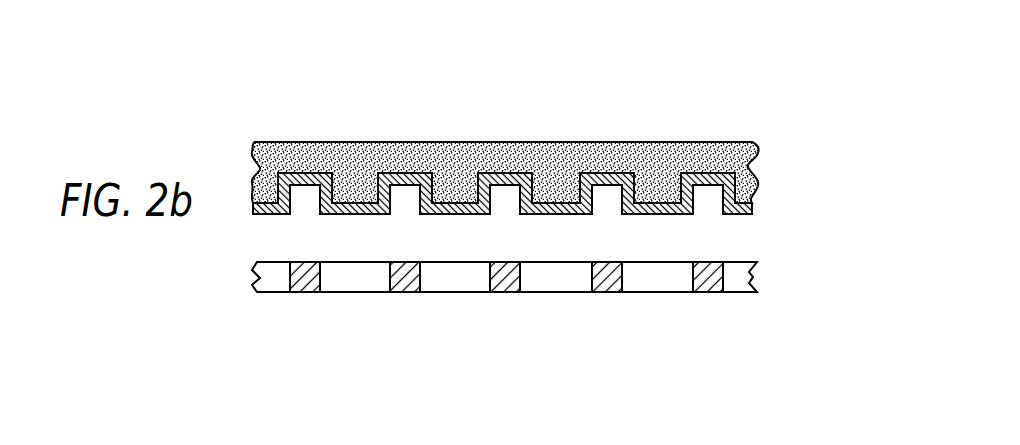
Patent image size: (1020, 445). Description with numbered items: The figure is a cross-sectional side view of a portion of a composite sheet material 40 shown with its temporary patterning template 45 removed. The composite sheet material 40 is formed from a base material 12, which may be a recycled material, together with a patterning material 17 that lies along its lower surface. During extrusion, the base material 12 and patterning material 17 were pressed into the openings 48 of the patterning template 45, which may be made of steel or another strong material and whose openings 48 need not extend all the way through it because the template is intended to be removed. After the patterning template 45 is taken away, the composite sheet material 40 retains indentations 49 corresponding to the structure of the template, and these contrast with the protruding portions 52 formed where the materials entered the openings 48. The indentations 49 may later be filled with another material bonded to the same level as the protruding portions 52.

The composite sheet material 40 is at (558, 150).
The base material 12 is at (655, 165).
The patterning material 17 is at (742, 206).
The protruding portions 52 is at (352, 214).
The indentations 49 is at (503, 202).
The openings 48 is at (523, 280).
The patterning template 45 is at (707, 282).